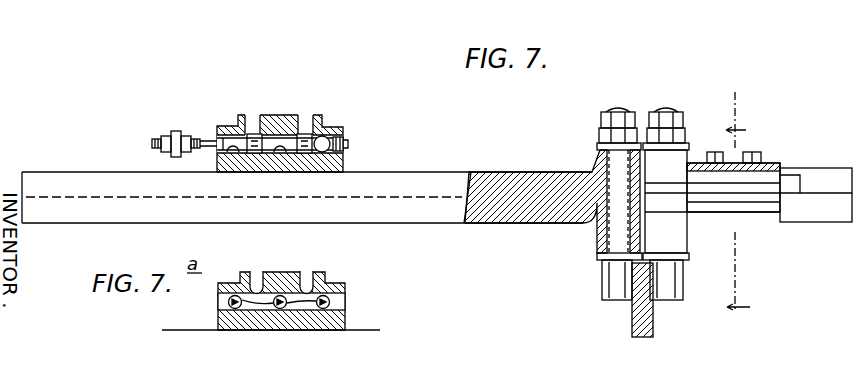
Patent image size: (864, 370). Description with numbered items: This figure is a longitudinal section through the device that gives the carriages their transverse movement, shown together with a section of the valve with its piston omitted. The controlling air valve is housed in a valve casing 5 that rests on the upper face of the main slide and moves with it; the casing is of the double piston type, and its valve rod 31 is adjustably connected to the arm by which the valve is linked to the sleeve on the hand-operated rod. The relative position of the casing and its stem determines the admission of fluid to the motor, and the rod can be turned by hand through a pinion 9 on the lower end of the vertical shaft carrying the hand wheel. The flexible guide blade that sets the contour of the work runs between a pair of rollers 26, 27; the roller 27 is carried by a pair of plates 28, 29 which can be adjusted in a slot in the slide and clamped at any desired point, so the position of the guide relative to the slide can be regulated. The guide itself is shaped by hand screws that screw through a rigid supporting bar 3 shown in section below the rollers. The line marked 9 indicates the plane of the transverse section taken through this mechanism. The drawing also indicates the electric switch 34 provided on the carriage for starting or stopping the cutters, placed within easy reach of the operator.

In FIG. 7, the rigid supporting bar 3 is at (645, 318).
In FIG. 7, the valve casing 5 is at (297, 126).
In FIG. 7A, the valve casing 5 is at (293, 282).
In FIG. 7, the pinion 9 is at (738, 203).
In FIG. 7, the roller 26 is at (603, 282).
In FIG. 7, the roller 27 is at (674, 282).
In FIG. 7, the plate 28 is at (770, 165).
In FIG. 7, the plate 29 is at (753, 203).
In FIG. 7, the valve rod 31 is at (150, 146).
In FIG. 7, the electric switch 34 is at (308, 115).
In FIG. 7A, the electric switch 34 is at (307, 273).